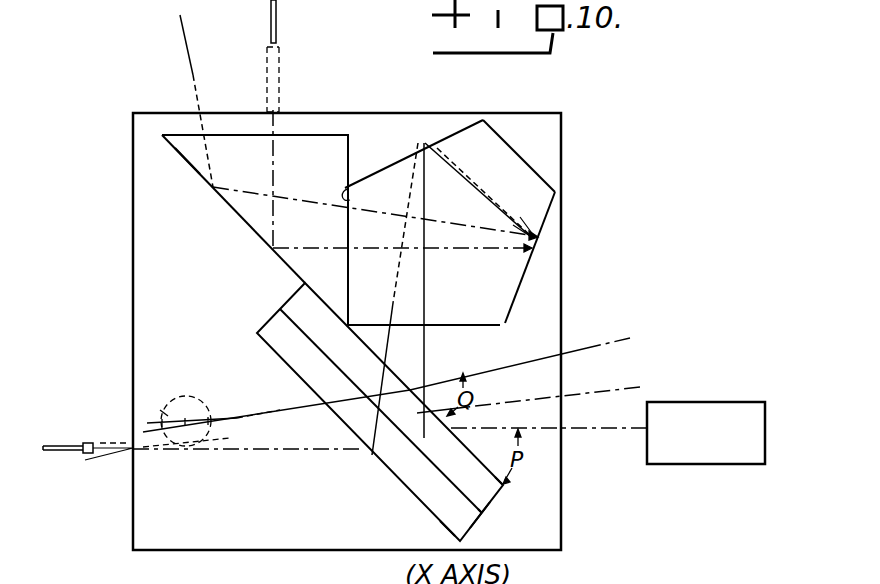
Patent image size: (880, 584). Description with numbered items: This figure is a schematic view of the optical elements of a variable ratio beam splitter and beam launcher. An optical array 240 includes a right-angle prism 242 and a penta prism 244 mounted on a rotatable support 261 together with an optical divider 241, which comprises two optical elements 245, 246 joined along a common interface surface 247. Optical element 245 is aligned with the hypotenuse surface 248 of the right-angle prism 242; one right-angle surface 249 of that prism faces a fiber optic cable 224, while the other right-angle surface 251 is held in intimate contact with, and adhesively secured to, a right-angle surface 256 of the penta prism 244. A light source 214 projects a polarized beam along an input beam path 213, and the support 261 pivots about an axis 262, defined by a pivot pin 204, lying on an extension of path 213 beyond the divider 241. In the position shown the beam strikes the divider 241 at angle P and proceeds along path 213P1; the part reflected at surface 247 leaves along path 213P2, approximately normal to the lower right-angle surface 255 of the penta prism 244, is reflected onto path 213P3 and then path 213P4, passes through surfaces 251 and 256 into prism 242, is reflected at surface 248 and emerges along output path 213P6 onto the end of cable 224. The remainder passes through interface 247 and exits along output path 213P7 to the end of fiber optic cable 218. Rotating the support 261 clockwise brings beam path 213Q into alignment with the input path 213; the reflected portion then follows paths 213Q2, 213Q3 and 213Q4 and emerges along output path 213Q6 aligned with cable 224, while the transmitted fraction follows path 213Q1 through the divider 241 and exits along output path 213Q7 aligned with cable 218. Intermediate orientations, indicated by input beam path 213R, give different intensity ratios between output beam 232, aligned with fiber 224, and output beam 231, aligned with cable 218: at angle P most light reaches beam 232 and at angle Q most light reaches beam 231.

The pivot pin 204 is at (163, 413).
The input beam path 213 is at (607, 431).
The beam path within divider 213P1 is at (424, 440).
The reflected beam path 213P2 is at (425, 355).
The beam path in penta prism 213P3 is at (437, 147).
The beam path through prism interface 213P4 is at (527, 255).
The output beam path 213P6 is at (275, 123).
The output beam path 213P7 is at (279, 451).
The beam path 213Q is at (631, 340).
The beam path within divider 213Q1 is at (374, 452).
The reflected beam path 213Q2 is at (396, 308).
The beam path in penta prism 213Q3 is at (508, 210).
The beam path through prism interface 213Q4 is at (316, 180).
The output beam path 213Q6 is at (180, 42).
The output beam path 213Q7 is at (302, 408).
The intermediate input beam path 213R is at (637, 388).
The light source 214 is at (722, 465).
The fiber optic cable 218 is at (65, 452).
The fiber optic cable 224 is at (278, 33).
The output beam 231 is at (101, 442).
The output beam 232 is at (278, 65).
The optical array 240 is at (260, 295).
The optical divider 241 is at (478, 526).
The right-angle prism 242 is at (243, 215).
The penta prism 244 is at (548, 222).
The optical element 245 is at (505, 486).
The optical element 246 is at (445, 517).
The reflecting interface surface 247 is at (484, 518).
The hypotenuse surface 248 is at (192, 164).
The right-angle surface 249 is at (247, 133).
The right-angle surface 251 is at (350, 147).
The lower right-angle surface 255 is at (510, 320).
The right-angle surface 256 is at (348, 172).
The rotatable support 261 is at (299, 549).
The pivot axis 262 is at (194, 400).